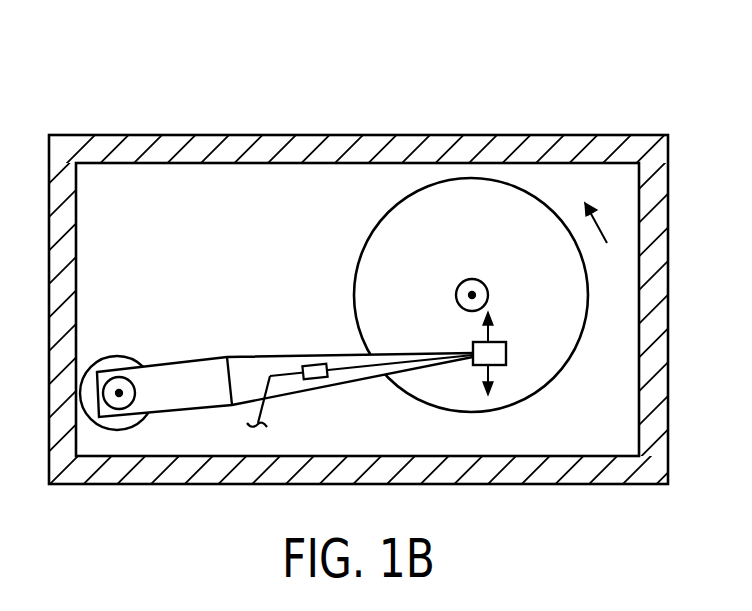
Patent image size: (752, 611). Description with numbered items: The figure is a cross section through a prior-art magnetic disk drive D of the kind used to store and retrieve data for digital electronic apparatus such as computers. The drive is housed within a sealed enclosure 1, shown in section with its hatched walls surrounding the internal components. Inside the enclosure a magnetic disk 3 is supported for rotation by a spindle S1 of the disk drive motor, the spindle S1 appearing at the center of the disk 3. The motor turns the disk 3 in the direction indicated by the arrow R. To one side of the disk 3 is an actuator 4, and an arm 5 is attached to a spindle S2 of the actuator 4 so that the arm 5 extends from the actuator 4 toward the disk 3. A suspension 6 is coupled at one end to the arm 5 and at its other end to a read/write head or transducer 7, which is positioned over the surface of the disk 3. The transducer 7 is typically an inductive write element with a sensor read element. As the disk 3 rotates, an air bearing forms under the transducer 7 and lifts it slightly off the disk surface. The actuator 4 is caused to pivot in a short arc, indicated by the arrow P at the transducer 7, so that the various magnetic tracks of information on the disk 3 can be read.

The sealed enclosure 1 is at (500, 142).
The magnetic disk 3 is at (393, 232).
The actuator 4 is at (112, 362).
The arm 5 is at (192, 365).
The suspension 6 is at (288, 365).
The read/write head or transducer 7 is at (506, 355).
The spindle of motor S1 is at (473, 294).
The spindle of actuator S2 is at (121, 393).
The magnetic disk drive D is at (405, 118).
The arrow indicating actuator pivot P is at (499, 349).
The arrow indicating disk rotation R is at (596, 212).